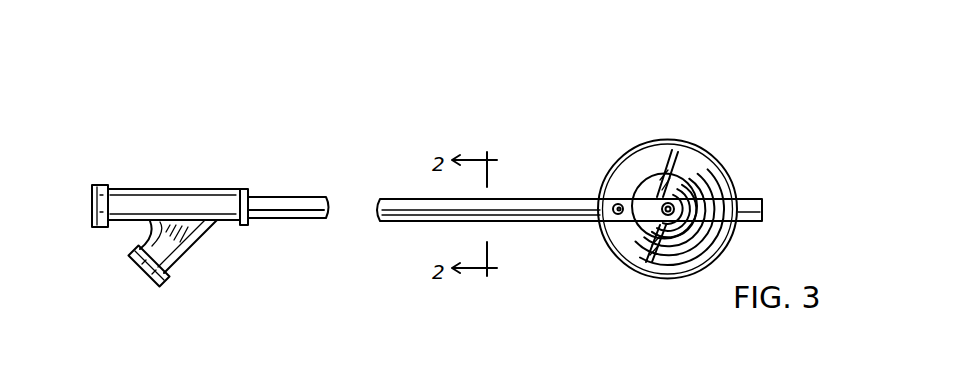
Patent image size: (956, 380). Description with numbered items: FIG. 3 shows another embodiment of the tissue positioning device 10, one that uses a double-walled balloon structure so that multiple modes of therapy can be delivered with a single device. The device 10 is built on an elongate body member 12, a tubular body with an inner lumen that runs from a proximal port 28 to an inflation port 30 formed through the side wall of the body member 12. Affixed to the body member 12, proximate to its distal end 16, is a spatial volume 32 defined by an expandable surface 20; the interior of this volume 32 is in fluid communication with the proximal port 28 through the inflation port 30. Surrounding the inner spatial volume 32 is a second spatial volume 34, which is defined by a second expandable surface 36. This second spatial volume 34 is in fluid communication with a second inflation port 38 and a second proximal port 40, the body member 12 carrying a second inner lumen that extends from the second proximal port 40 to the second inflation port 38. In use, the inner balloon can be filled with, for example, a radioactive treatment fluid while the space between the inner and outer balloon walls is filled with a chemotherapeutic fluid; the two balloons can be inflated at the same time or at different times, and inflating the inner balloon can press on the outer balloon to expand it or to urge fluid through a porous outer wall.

The tissue positioning device 10 is at (387, 102).
The elongate body member 12 is at (153, 189).
The distal end 16 is at (762, 211).
The expandable surface 20 is at (643, 177).
The proximal port 28 is at (91, 201).
The inflation port 30 is at (681, 197).
The spatial volume 32 is at (675, 178).
The second spatial volume 34 is at (620, 236).
The second expandable surface 36 is at (690, 147).
The second inflation port 38 is at (605, 178).
The second proximal port 40 is at (147, 272).